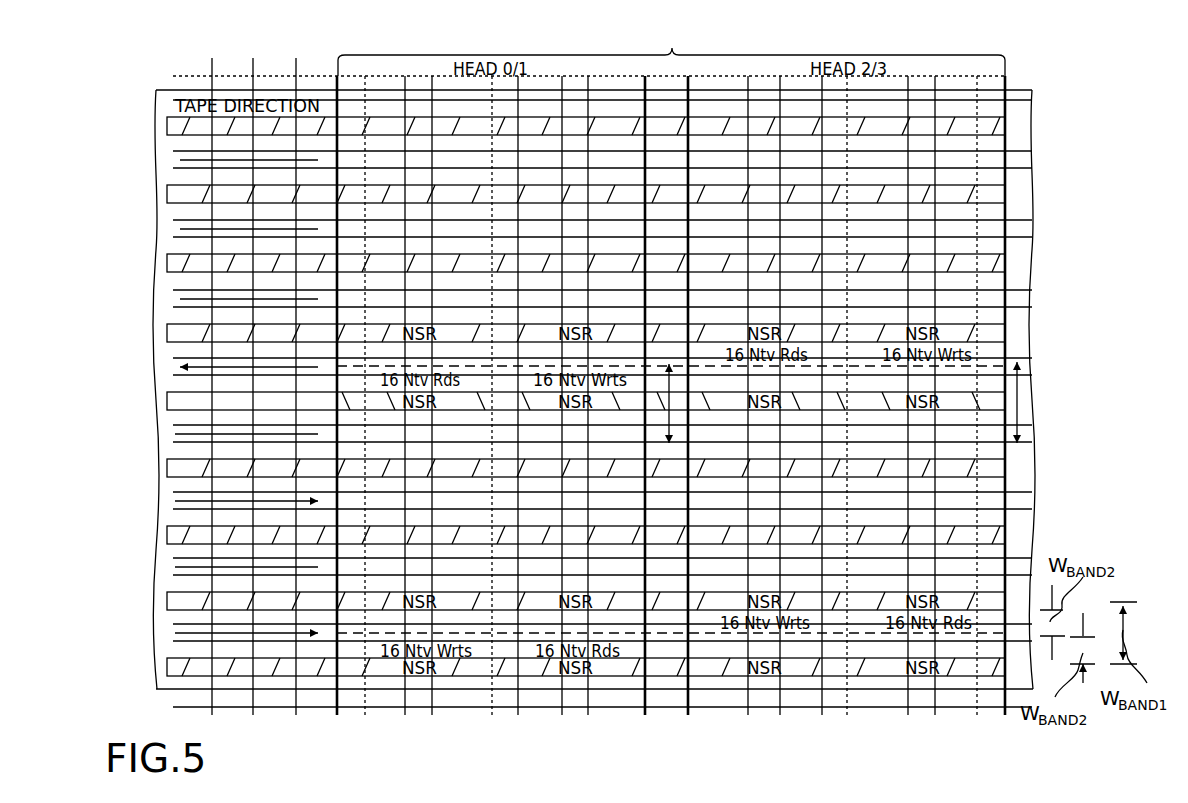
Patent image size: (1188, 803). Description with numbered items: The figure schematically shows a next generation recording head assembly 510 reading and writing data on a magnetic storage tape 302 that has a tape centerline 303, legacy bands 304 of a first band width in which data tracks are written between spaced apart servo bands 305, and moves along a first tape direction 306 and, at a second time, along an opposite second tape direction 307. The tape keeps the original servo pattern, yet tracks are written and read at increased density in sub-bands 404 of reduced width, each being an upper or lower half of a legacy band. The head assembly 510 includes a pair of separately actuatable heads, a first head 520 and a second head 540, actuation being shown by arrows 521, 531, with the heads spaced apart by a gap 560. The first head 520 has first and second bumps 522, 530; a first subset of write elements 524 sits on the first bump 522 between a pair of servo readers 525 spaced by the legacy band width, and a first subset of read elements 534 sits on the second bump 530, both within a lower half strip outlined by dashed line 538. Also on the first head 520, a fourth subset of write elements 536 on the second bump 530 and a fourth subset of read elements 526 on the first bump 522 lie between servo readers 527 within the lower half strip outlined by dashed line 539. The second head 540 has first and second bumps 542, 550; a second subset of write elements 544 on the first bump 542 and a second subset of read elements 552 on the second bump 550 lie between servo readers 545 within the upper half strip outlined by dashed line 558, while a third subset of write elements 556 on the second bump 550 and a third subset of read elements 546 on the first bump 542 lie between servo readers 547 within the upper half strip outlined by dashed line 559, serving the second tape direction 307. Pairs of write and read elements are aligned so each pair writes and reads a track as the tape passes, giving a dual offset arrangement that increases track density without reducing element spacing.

The magnetic storage tape 302 is at (178, 90).
The tape centerline 303 is at (167, 402).
The band 304 is at (190, 625).
The servo band 305 is at (190, 667).
The first tape direction 306 is at (207, 500).
The second tape direction 307 is at (213, 297).
The sub-band 404 is at (350, 647).
The recording head assembly 510 is at (671, 51).
The first head 520 is at (486, 714).
The actuation arrow 521 is at (673, 403).
The first bump 522 is at (388, 708).
The first subset of write elements 524 is at (458, 670).
The servo readers 525 is at (347, 647).
The fourth subset of read elements 526 is at (460, 364).
The servo readers 527 is at (357, 395).
The second bump 530 is at (575, 707).
The actuation arrow 531 is at (1017, 403).
The first subset of read elements 534 is at (619, 664).
The fourth subset of write elements 536 is at (612, 362).
The dashed line 538 is at (508, 637).
The dashed line 539 is at (507, 367).
The second head 540 is at (844, 713).
The first bump 542 is at (773, 708).
The second subset of write elements 544 is at (813, 608).
The servo readers 545 is at (733, 665).
The third subset of read elements 546 is at (810, 343).
The servo readers 547 is at (837, 325).
The second bump 550 is at (960, 707).
The second subset of read elements 552 is at (974, 608).
The third subset of write elements 556 is at (957, 377).
The dashed line 558 is at (870, 630).
The dashed line 559 is at (988, 363).
The gap 560 is at (667, 697).